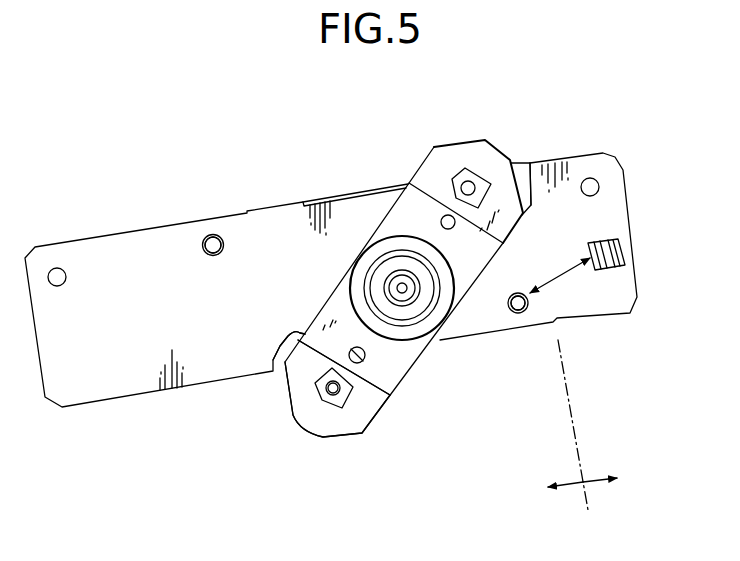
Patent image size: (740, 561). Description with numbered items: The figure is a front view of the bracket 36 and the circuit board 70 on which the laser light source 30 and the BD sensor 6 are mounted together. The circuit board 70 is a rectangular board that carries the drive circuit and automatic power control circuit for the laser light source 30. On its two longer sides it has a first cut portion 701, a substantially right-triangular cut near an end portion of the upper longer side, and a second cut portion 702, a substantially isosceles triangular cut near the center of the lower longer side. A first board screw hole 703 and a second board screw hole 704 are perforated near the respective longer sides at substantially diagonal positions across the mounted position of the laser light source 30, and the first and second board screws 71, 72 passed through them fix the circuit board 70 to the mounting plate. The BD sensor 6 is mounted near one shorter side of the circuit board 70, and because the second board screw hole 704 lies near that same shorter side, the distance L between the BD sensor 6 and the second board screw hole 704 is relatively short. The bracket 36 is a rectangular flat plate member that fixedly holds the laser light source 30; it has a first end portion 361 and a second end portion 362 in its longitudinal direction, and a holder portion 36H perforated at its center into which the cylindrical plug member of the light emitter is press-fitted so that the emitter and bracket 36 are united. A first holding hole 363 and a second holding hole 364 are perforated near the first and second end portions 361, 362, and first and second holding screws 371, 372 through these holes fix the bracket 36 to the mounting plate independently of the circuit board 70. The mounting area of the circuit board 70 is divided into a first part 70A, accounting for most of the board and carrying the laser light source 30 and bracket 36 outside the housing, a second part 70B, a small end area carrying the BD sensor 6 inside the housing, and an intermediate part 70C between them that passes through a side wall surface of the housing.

The circuit board 70 is at (134, 372).
The first cut portion 701 is at (533, 200).
The second cut portion 702 is at (285, 352).
The first board screw hole 703 is at (213, 255).
The second board screw hole 704 is at (511, 303).
The first board screw 71 is at (216, 237).
The second board screw 72 is at (524, 310).
The laser light source 30 is at (402, 286).
The bracket 36 is at (393, 368).
The holder portion 36H is at (412, 313).
The first end portion 361 is at (485, 150).
The second end portion 362 is at (357, 418).
The first holding hole 363 is at (484, 186).
The second holding hole 364 is at (341, 400).
The first holding screw 371 is at (466, 186).
The second holding screw 372 is at (333, 392).
The BD sensor 6 is at (606, 270).
The distance L is at (560, 271).
The first part 70A is at (538, 491).
The second part 70B is at (626, 473).
The intermediate part 70C is at (587, 441).